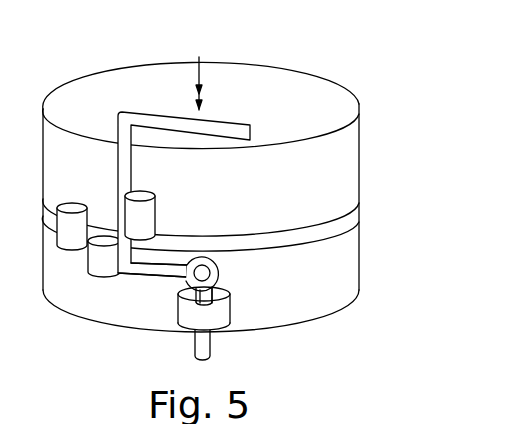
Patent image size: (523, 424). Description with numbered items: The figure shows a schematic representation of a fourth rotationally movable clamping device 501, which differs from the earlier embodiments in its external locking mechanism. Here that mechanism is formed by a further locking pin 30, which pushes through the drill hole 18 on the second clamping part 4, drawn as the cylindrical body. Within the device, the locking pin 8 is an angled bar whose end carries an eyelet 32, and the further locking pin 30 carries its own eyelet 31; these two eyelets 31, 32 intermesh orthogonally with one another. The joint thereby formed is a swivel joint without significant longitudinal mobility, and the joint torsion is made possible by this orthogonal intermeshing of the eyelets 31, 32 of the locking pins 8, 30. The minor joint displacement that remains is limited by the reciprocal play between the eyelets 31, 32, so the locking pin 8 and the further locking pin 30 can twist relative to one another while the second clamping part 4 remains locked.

The clamping device 501 is at (251, 203).
The second clamping part 4 is at (349, 261).
The locking pin 8 is at (226, 124).
The drill hole 18 is at (222, 294).
The further locking pin 30 is at (211, 347).
The eyelet 31 is at (168, 285).
The eyelet 32 is at (212, 244).